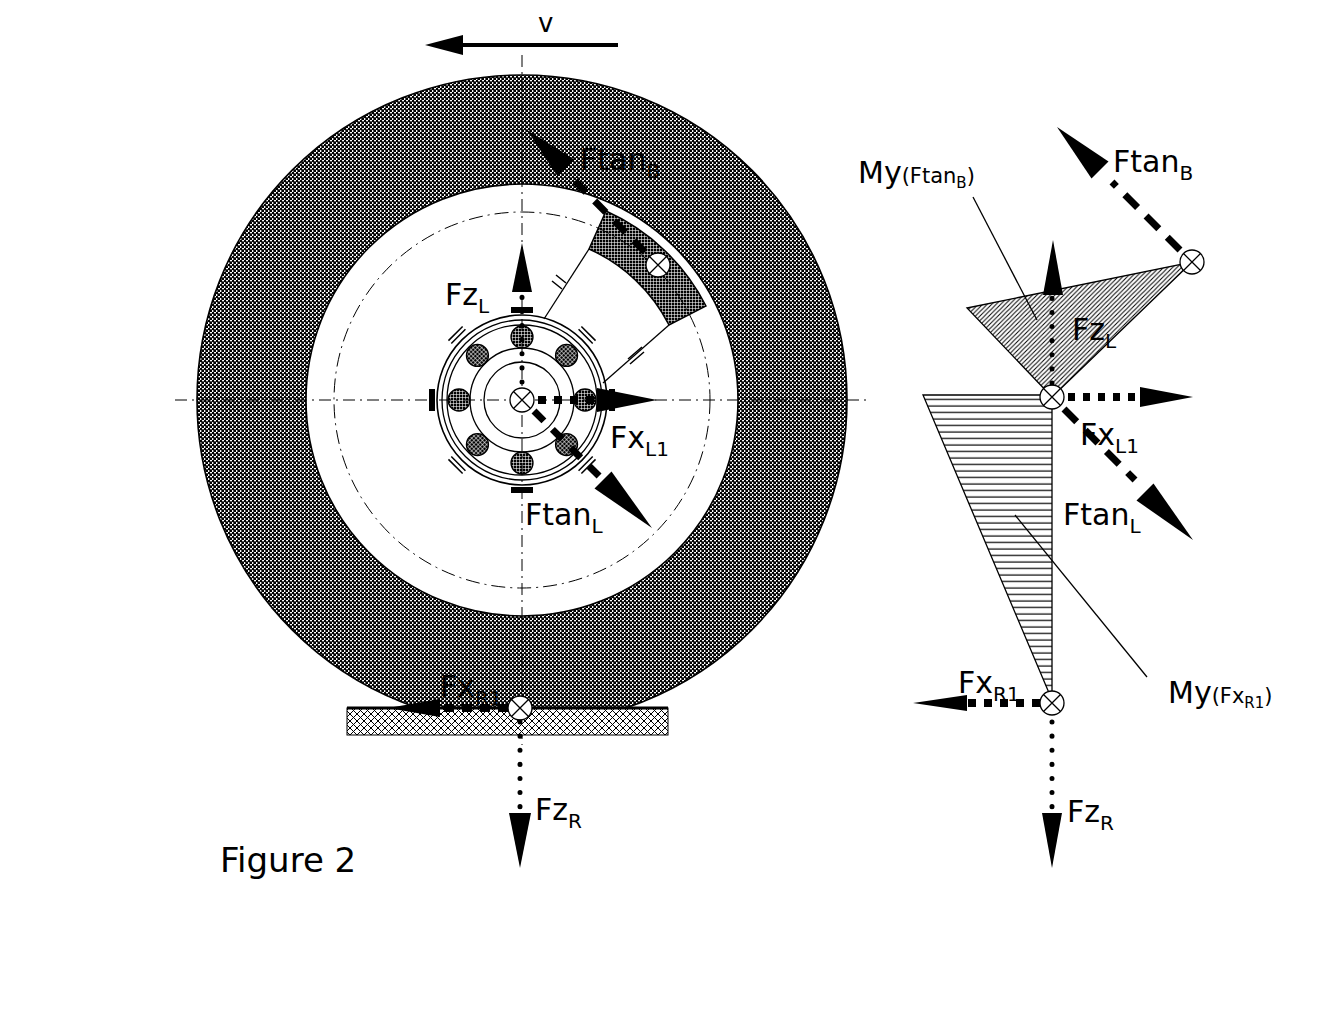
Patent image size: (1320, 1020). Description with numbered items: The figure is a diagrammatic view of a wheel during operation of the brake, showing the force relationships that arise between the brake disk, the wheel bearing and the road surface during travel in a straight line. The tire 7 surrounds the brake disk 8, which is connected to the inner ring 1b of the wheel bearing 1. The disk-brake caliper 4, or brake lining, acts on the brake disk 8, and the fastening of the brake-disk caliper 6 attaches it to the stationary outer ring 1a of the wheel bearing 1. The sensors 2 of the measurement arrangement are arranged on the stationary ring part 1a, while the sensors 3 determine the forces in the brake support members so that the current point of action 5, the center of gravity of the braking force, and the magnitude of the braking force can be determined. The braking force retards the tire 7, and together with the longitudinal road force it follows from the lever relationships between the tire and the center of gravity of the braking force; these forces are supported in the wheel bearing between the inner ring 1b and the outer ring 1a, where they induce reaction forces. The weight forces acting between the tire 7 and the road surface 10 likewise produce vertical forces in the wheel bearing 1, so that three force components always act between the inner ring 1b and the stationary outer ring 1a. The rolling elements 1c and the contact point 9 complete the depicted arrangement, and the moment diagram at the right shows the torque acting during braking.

The wheel bearing 1 is at (452, 483).
The stationary outer ring 1a is at (443, 436).
The inner ring 1b is at (478, 408).
The rolling elements 1c is at (503, 470).
The sensors 2 is at (446, 332).
The sensors 3 is at (640, 362).
The disk-brake caliper 4 is at (670, 297).
The point of action 5 is at (662, 262).
The fastening of the brake-disk caliper 6 is at (663, 340).
The tire 7 is at (327, 212).
The brake disk 8 is at (385, 293).
The tire contact point 9 is at (530, 716).
The road surface 10 is at (645, 720).